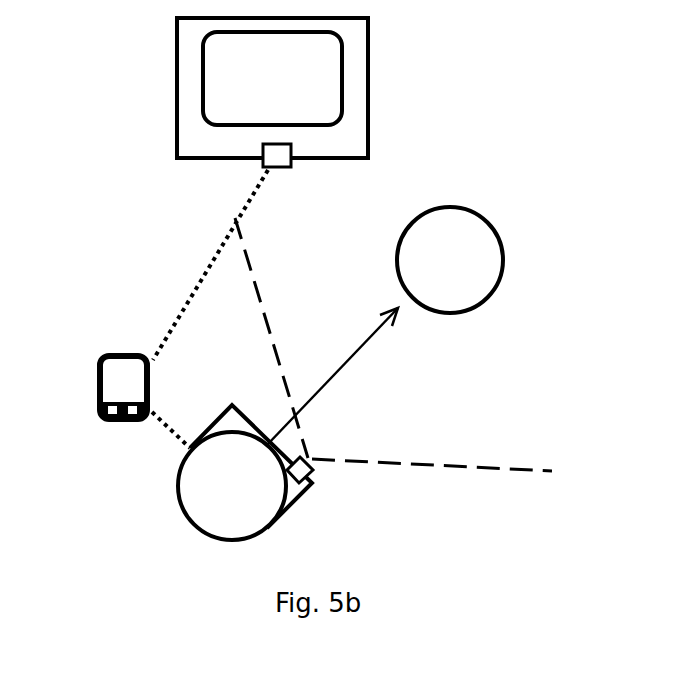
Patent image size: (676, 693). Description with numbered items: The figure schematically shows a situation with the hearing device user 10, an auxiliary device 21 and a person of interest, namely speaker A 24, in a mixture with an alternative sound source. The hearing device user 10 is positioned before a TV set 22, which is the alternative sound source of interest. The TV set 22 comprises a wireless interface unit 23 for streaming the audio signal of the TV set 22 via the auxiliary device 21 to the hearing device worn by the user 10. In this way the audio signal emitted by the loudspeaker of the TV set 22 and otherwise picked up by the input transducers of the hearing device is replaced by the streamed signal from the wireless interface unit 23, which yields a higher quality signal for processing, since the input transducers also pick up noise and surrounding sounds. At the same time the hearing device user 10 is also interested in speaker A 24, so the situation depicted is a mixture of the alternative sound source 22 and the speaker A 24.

The hearing device user 10 is at (178, 476).
The auxiliary device 21 is at (92, 373).
The TV set 22 is at (367, 68).
The wireless interface unit 23 is at (281, 170).
The speaker A 24 is at (507, 252).